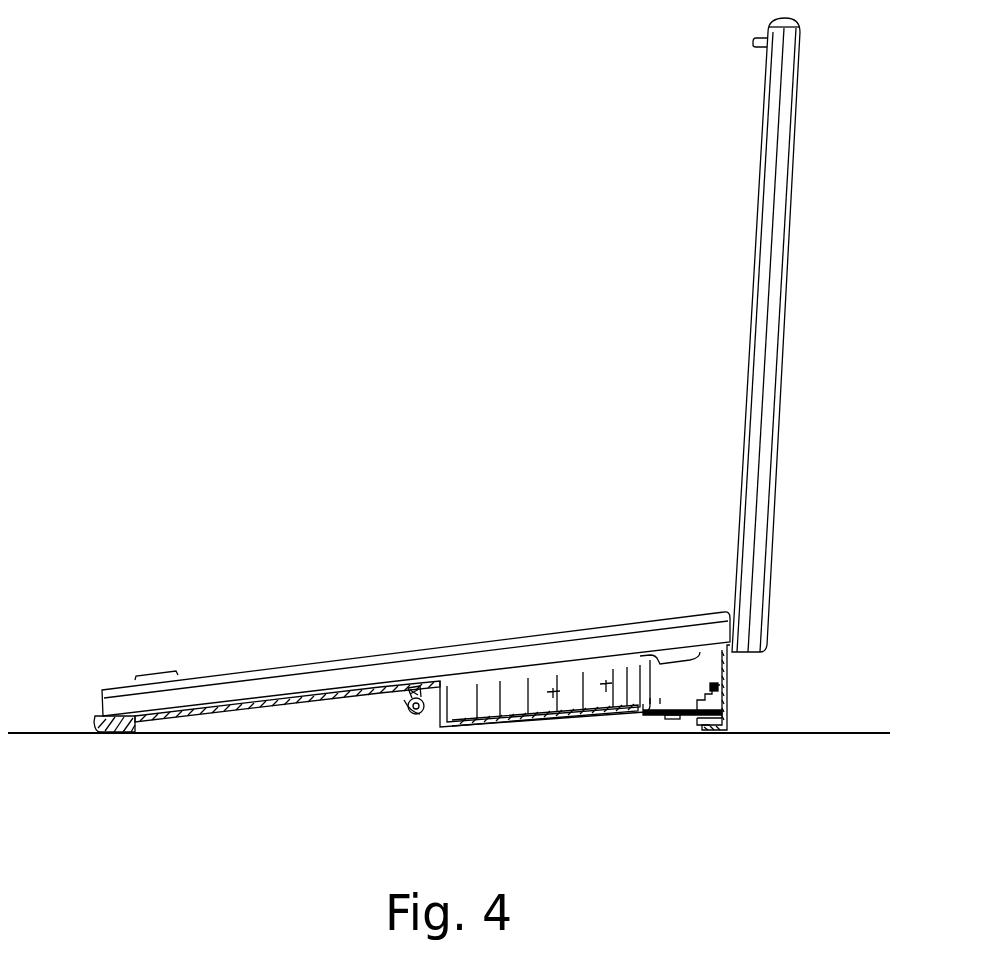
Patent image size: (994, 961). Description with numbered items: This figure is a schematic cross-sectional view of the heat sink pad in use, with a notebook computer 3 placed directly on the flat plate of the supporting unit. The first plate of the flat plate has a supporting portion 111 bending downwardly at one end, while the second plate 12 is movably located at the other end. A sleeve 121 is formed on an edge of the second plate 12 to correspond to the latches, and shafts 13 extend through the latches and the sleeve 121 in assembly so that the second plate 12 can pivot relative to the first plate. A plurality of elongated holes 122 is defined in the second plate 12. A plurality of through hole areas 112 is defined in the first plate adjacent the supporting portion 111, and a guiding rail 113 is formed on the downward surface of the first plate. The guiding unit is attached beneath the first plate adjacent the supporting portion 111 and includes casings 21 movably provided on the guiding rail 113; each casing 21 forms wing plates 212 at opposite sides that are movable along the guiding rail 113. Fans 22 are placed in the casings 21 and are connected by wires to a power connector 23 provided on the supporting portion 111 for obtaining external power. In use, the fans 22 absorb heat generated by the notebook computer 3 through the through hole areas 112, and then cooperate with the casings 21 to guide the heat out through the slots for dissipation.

The notebook computer 3 is at (760, 242).
The supporting portion 111 is at (728, 693).
The through hole areas 112 is at (510, 668).
The guiding rail 113 is at (657, 705).
The second plate 12 is at (118, 735).
The sleeve 121 is at (405, 708).
The elongated holes 122 is at (240, 712).
The shafts 13 is at (413, 716).
The casings 21 is at (525, 725).
The wing plates 212 is at (650, 656).
The fans 22 is at (548, 703).
The power connector 23 is at (696, 718).